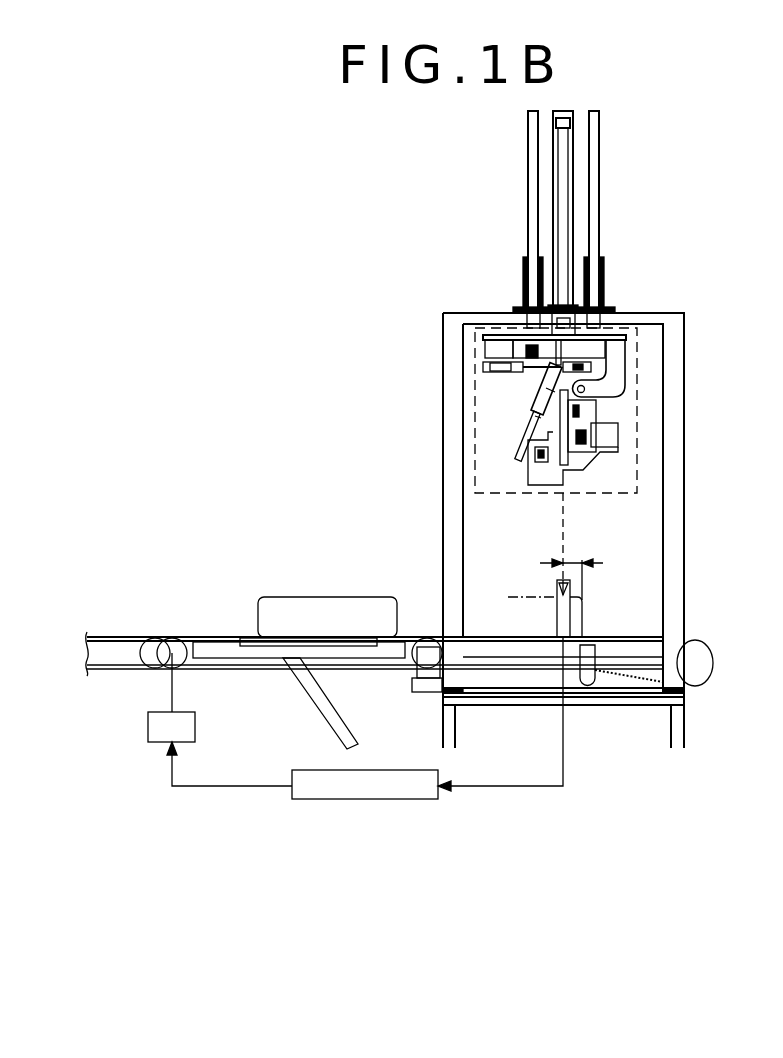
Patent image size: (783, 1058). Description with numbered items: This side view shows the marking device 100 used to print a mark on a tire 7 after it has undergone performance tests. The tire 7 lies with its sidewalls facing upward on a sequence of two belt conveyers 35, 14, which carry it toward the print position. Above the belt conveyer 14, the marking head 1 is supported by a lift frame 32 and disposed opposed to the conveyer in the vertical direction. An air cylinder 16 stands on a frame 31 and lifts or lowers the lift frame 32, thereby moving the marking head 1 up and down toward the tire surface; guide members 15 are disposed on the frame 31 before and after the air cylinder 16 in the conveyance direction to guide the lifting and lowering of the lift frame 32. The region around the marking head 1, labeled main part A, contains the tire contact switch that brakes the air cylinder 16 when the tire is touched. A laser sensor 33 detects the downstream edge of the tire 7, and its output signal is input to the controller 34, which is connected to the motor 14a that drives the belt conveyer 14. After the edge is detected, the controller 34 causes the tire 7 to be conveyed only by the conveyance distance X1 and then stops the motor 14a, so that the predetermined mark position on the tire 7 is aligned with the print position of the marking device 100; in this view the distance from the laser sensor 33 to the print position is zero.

The marking device 100 is at (673, 263).
The marking head 1 is at (612, 413).
The frame 31 is at (685, 508).
The lift frame 32 is at (483, 338).
The guide members 15 is at (528, 211).
The air cylinder 16 is at (573, 165).
The belt conveyer 14 is at (625, 637).
The motor 14a is at (148, 730).
The belt conveyer 35 is at (110, 637).
The controller 34 is at (393, 770).
The laser sensor 33 is at (557, 612).
The tire 7 is at (283, 597).
The main part A is at (475, 436).
The conveyance distance X1 is at (578, 568).